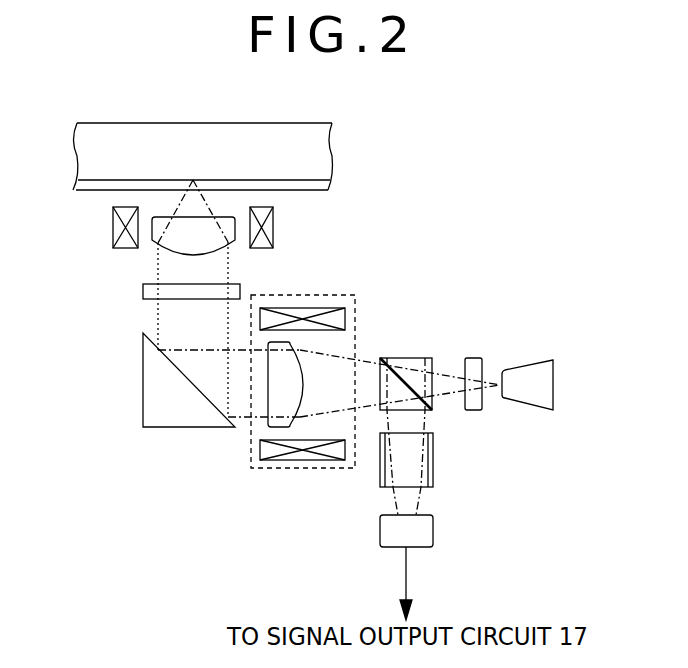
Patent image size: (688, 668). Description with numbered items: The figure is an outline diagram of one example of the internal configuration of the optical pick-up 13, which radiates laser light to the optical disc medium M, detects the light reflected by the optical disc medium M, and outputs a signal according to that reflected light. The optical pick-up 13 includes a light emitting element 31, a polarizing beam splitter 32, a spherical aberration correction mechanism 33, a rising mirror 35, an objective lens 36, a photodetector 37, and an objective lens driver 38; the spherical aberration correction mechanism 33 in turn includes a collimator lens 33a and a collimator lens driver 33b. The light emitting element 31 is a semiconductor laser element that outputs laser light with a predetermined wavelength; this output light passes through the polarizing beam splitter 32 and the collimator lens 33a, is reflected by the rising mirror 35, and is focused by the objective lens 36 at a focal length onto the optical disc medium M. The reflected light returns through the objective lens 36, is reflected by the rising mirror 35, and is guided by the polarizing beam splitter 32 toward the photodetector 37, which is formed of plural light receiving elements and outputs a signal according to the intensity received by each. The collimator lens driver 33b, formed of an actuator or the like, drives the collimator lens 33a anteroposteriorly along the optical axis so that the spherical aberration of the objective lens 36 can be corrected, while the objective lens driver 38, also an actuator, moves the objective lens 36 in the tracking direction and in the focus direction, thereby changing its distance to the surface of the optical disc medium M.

The optical disc medium M is at (280, 122).
The optical pick-up 13 is at (508, 323).
The light emitting element 31 is at (525, 405).
The polarizing beam splitter 32 is at (408, 357).
The spherical aberration correction mechanism 33 is at (277, 378).
The collimator lens 33a is at (268, 413).
The collimator lens driver 33b is at (305, 462).
The rising mirror 35 is at (158, 429).
The objective lens 36 is at (155, 241).
The photodetector 37 is at (434, 530).
The objective lens driver 38 is at (110, 228).